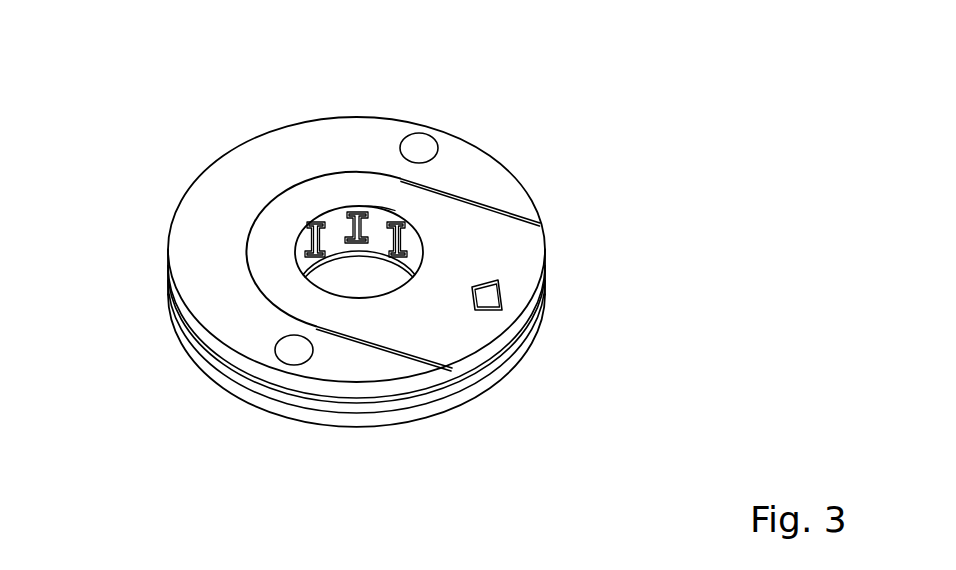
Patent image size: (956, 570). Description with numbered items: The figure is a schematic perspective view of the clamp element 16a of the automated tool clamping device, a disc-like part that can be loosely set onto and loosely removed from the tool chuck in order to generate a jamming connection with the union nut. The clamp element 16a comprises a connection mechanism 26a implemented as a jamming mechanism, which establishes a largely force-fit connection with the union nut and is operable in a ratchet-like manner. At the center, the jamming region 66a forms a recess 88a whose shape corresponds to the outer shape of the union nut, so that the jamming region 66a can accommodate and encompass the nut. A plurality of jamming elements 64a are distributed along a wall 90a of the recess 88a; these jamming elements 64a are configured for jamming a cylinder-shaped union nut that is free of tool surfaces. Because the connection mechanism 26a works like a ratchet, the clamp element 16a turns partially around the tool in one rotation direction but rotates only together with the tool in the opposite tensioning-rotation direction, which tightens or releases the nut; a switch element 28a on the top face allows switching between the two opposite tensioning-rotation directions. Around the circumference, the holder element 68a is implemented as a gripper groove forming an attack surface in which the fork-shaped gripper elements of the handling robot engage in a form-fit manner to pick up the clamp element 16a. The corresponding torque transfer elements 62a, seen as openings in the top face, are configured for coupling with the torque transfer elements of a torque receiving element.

The clamp element 16a is at (523, 171).
The connection mechanism 26a is at (333, 229).
The switch element 28a is at (489, 299).
The corresponding torque transfer elements 62a is at (421, 148).
The jamming elements 64a is at (358, 211).
The jamming region 66a is at (342, 278).
The holder element 68a is at (344, 411).
The recess 88a is at (380, 273).
The wall 90a is at (378, 229).